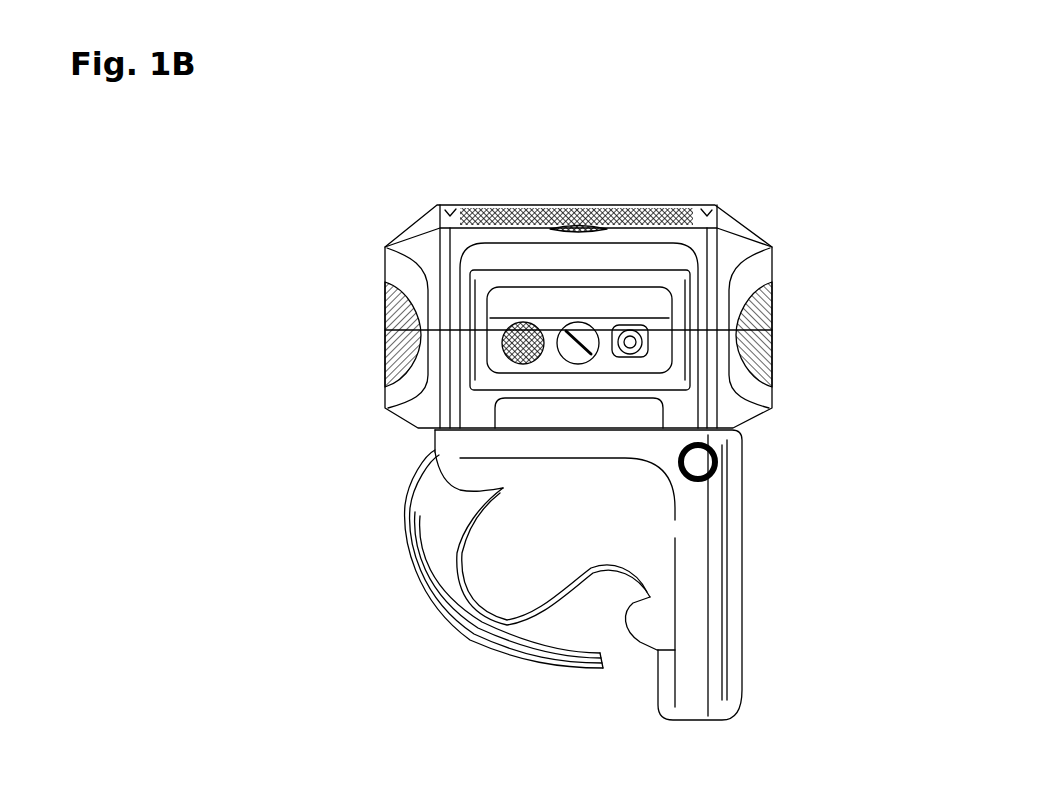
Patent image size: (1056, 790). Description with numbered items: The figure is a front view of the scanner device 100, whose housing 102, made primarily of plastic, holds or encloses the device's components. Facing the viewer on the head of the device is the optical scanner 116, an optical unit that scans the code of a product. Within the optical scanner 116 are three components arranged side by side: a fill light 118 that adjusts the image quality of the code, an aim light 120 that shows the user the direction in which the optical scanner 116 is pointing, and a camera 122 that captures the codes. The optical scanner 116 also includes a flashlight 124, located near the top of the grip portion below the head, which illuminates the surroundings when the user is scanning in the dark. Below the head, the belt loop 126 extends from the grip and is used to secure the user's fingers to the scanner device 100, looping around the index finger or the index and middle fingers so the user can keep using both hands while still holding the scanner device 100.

The scanner device 100 is at (797, 153).
The housing 102 is at (727, 212).
The optical scanner 116 is at (480, 167).
The fill light 118 is at (523, 322).
The aim light 120 is at (580, 322).
The camera 122 is at (632, 325).
The flashlight 124 is at (720, 465).
The belt loop 126 is at (520, 657).